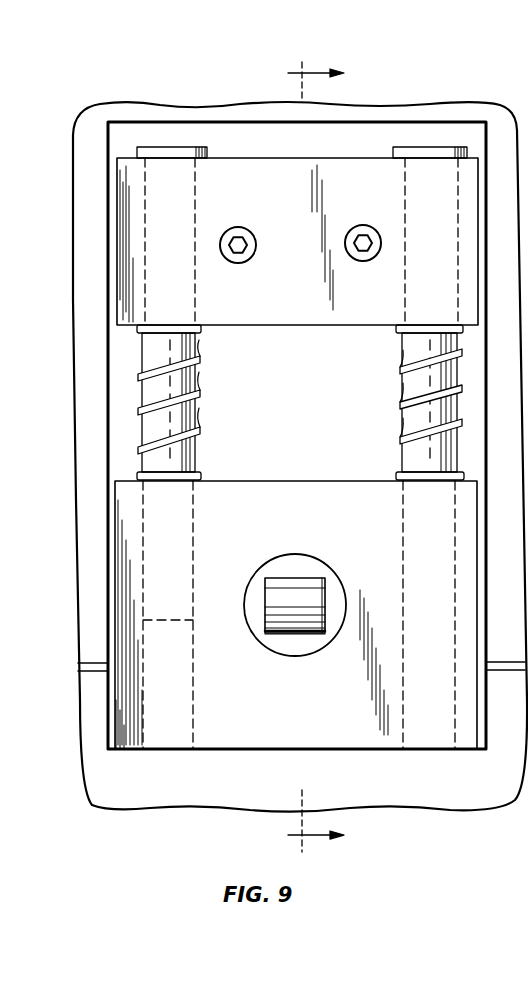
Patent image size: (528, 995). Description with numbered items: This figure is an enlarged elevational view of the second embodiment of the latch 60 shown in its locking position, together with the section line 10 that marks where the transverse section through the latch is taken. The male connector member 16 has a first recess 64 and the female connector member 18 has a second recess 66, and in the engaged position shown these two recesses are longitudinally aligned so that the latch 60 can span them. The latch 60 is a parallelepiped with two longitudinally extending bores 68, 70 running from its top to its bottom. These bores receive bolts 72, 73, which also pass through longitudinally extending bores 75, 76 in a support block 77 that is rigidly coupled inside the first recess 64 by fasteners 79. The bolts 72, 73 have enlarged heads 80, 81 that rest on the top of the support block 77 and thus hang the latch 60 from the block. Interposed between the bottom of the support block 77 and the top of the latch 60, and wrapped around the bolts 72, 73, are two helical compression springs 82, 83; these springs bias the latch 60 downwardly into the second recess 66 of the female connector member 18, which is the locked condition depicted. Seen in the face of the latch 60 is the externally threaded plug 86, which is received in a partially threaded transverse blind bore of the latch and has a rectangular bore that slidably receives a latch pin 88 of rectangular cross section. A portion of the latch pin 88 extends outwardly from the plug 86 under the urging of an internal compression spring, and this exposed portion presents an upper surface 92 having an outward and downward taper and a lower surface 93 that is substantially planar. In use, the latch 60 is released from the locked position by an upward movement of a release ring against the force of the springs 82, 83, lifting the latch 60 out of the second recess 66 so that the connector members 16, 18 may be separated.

The section line 10- 10 is at (299, 457).
The male connector member 16 is at (70, 166).
The female connector member 18 is at (70, 757).
The latch 60 is at (319, 503).
The first recess 64 is at (136, 127).
The second recess 66 is at (108, 728).
The longitudinally extending bore 68 is at (407, 526).
The longitudinally extending bore 70 is at (192, 545).
The bolt 72 is at (400, 368).
The bolt 73 is at (196, 378).
The longitudinally extending bore 75 is at (408, 206).
The longitudinally extending bore 76 is at (195, 232).
The support block 77 is at (283, 158).
The fasteners 79 is at (346, 236).
The enlarged head 80 is at (402, 150).
The enlarged head 81 is at (188, 143).
The helical compression spring 82 is at (401, 405).
The helical compression spring 83 is at (200, 432).
The externally threaded plug 86 is at (330, 592).
The latch pin 88 is at (307, 632).
The upper surface 92 is at (278, 598).
The lower surface 93 is at (278, 635).